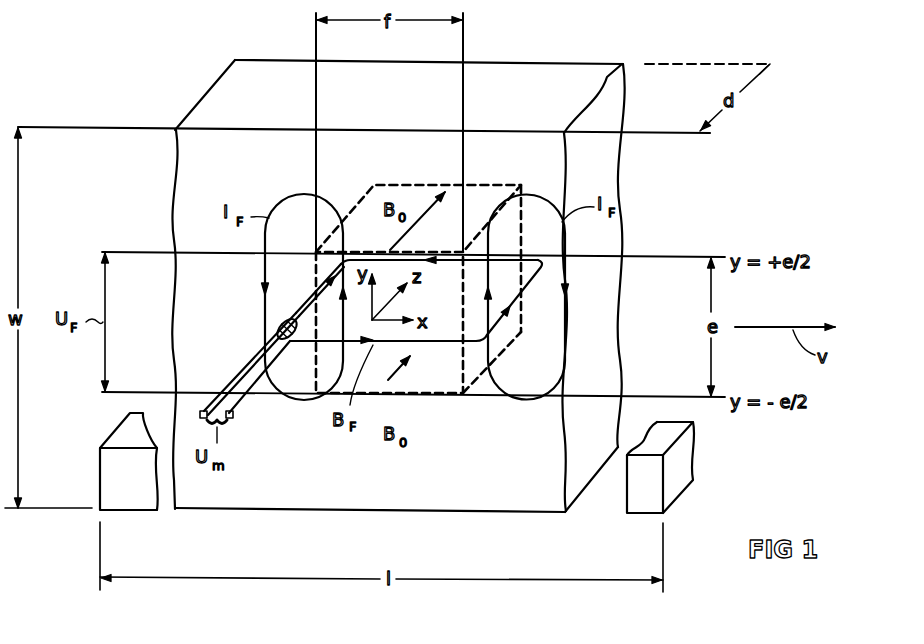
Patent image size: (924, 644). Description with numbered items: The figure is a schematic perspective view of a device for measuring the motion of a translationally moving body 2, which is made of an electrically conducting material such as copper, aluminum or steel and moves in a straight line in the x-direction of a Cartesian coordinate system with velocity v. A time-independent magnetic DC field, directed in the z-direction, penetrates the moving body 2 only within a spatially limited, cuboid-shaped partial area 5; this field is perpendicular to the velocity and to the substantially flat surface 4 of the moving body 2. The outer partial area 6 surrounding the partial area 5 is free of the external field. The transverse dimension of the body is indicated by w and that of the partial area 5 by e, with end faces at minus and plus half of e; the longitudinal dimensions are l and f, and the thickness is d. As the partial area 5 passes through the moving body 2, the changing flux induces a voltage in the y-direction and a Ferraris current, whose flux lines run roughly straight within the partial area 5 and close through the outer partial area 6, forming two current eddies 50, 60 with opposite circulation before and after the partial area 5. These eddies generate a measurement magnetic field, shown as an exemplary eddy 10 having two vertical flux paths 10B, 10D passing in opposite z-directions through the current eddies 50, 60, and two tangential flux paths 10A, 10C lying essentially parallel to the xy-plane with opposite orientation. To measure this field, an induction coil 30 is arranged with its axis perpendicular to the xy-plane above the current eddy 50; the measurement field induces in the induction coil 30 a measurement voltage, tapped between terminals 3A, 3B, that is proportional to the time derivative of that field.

The moving body 2 is at (297, 478).
The flat surface 4 is at (465, 487).
The outer partial area 6 is at (233, 107).
The partial area 5 is at (420, 184).
The eddy of the measurement magnetic field 10 is at (434, 339).
The tangential flux path 10A is at (430, 342).
The vertical flux path 10B is at (570, 333).
The tangential flux path 10C is at (500, 260).
The vertical flux path 10D is at (305, 308).
The induction coil 30 is at (270, 340).
The terminal 3A is at (235, 416).
The terminal 3B is at (203, 412).
The current eddy 50 is at (307, 196).
The current eddy 60 is at (537, 196).